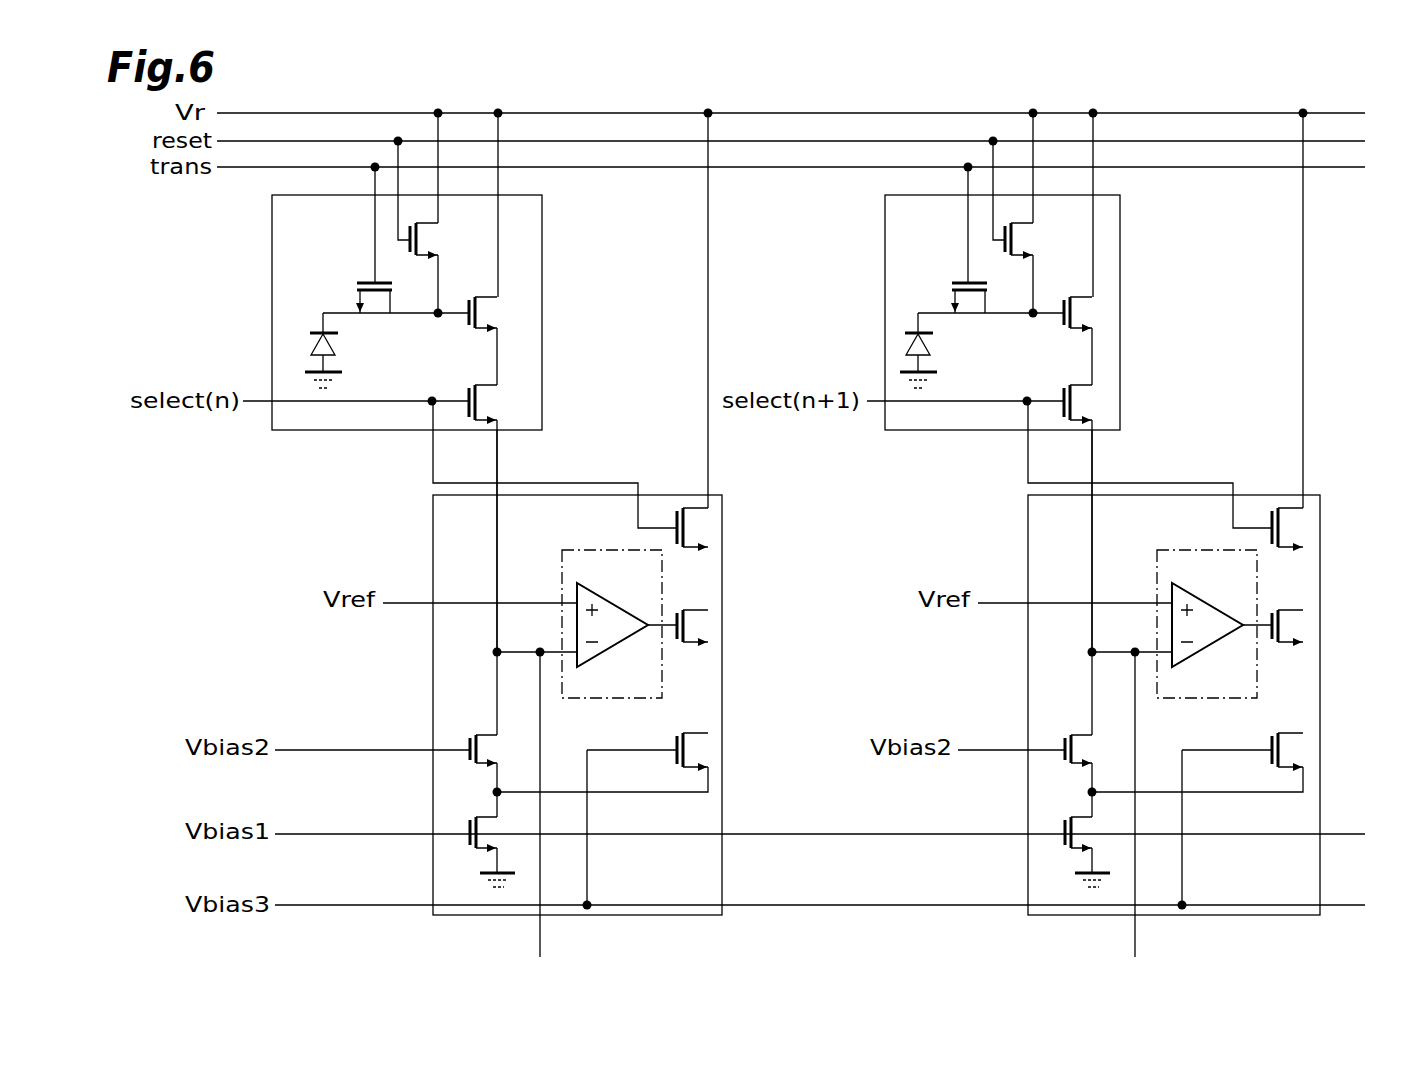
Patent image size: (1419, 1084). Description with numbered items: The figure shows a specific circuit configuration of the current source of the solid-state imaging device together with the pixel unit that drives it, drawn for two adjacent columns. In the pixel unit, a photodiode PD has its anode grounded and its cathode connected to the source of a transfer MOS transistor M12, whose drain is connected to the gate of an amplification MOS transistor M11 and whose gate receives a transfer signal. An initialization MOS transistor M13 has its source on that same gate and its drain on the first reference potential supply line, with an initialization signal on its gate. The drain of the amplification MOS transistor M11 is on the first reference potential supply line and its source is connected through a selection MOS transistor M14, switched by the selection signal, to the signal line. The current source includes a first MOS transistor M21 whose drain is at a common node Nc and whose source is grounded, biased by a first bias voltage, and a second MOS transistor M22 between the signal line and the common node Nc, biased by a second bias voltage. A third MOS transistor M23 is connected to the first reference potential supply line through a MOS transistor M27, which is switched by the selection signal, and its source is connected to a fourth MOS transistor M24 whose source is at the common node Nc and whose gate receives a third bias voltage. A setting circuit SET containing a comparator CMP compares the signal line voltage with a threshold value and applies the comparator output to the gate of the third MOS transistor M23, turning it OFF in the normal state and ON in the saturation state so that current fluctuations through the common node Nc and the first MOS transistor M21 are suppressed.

The amplification MOS transistor M11 is at (488, 295).
The transfer MOS transistor M12 is at (365, 282).
The initialization MOS transistor M13 is at (462, 231).
The selection MOS transistor M14 is at (490, 382).
The photodiode PD is at (336, 345).
The first MOS transistor M21 is at (490, 816).
The second MOS transistor M22 is at (490, 732).
The third MOS transistor M23 is at (698, 649).
The fourth MOS transistor M24 is at (677, 752).
The MOS transistor M27 is at (701, 508).
The common node Nc is at (502, 788).
The comparator CMP is at (625, 606).
The setting circuit SET is at (582, 552).